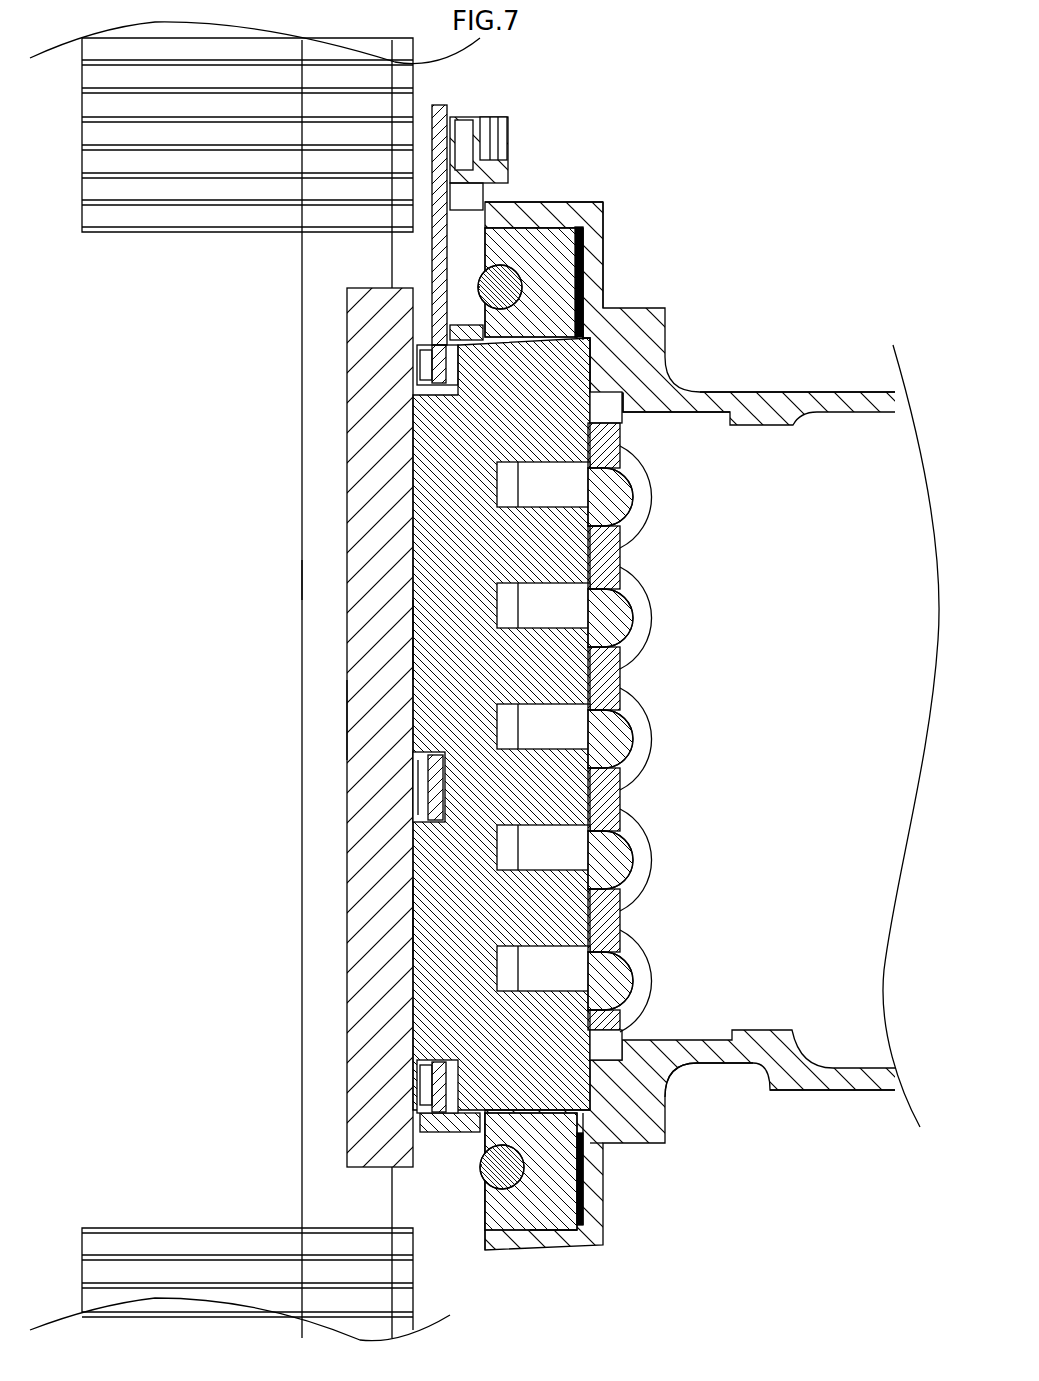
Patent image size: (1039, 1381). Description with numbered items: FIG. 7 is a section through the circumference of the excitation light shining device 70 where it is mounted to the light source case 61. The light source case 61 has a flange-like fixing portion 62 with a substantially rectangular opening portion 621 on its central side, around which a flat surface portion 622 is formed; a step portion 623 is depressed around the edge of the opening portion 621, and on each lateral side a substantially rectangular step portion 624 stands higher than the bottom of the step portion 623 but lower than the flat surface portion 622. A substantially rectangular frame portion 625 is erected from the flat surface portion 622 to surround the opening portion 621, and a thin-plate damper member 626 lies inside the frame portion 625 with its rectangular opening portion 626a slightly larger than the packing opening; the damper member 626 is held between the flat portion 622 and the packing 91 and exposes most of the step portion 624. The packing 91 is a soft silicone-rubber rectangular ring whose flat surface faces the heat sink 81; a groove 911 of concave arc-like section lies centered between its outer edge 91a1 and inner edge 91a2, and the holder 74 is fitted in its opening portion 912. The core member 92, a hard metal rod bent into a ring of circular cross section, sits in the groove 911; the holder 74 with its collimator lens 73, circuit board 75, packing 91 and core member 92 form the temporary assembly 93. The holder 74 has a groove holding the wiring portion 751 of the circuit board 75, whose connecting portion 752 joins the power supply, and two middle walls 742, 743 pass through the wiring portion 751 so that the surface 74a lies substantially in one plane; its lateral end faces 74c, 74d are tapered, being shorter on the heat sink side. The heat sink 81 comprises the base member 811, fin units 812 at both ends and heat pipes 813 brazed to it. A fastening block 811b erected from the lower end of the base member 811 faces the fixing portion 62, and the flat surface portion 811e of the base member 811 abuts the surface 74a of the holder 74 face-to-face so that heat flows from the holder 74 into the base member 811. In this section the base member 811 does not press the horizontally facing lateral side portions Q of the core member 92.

The light source case 61 is at (806, 390).
The fixing portion 62 is at (605, 203).
The opening portion 621 is at (692, 1067).
The flat surface portion 622 is at (603, 230).
The step portion 623 is at (625, 413).
The step portion 624 is at (588, 345).
The frame portion 625 is at (575, 204).
The damper member 626 is at (583, 258).
The opening portion 626a is at (607, 1145).
The excitation light shining device 70 is at (240, 798).
The collimator lens 73 is at (633, 617).
The holder 74 is at (345, 632).
The surface of the holder 74a is at (345, 717).
The lateral end face 74c is at (602, 1152).
The lateral end face 74d is at (583, 325).
The middle wall 742 is at (410, 636).
The middle wall 743 is at (410, 880).
The circuit board 75 is at (430, 236).
The wiring portion 751 is at (420, 1078).
The connecting portion 752 is at (430, 262).
The heat sink 81 is at (300, 479).
The base member 811 is at (345, 540).
The fastening block 811b is at (443, 1167).
The flat surface portion 811e is at (415, 842).
The fin unit 812 is at (115, 236).
The heat pipe 813 is at (300, 577).
The packing 91 is at (518, 215).
The outer edge 91a1 is at (487, 1160).
The inner edge 91a2 is at (553, 1170).
The groove 911 is at (580, 232).
The opening portion 912 is at (581, 1135).
The core member 92 is at (507, 268).
The temporary assembly 93 is at (695, 835).
The lateral side portion Q is at (480, 296).